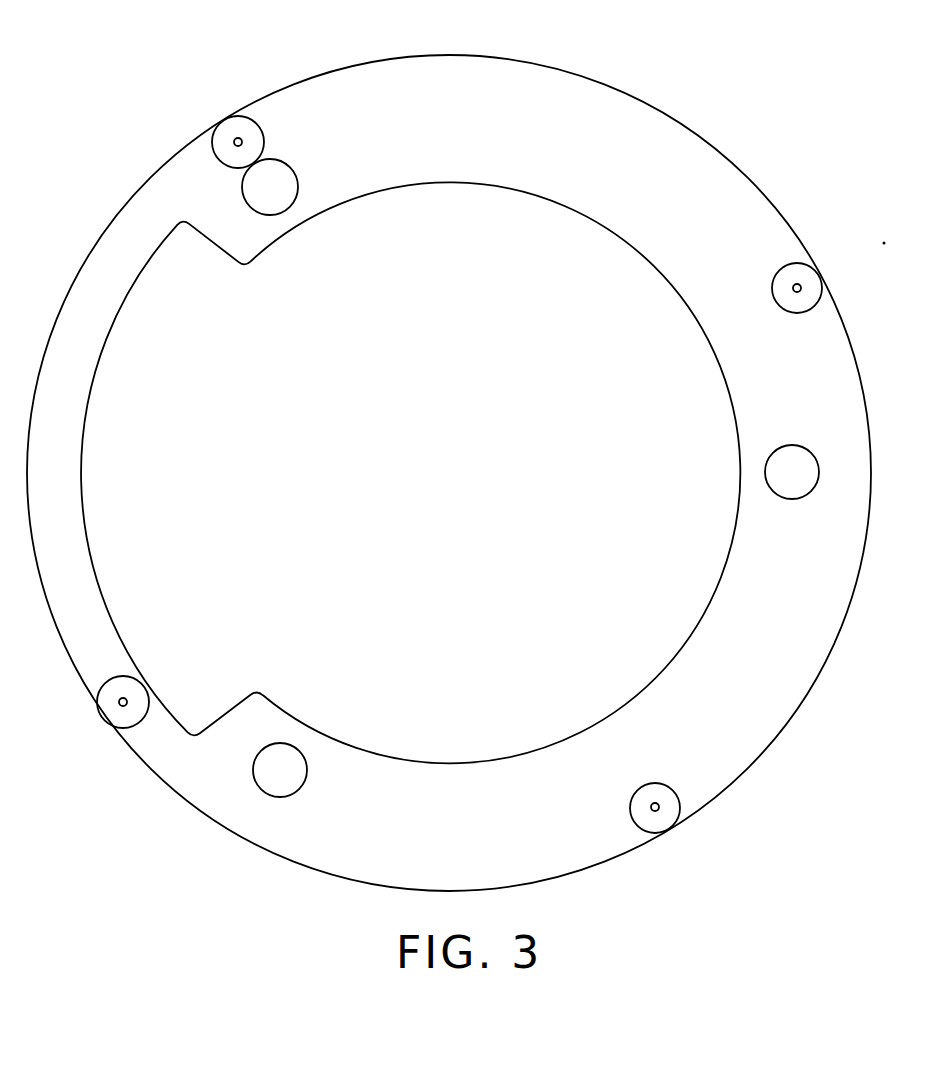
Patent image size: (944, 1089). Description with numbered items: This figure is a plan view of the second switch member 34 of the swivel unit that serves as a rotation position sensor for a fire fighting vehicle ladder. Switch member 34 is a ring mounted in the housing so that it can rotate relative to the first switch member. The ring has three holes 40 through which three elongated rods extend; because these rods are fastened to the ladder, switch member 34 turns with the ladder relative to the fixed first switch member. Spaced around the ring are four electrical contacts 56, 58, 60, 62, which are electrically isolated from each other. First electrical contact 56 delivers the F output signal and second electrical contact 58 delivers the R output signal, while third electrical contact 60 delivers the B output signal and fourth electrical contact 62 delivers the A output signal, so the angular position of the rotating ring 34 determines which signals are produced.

The second switch member 34 is at (578, 74).
The holes 40 is at (288, 166).
The first electrical contact 56 is at (237, 137).
The second electrical contact 58 is at (657, 811).
The third electrical contact 60 is at (126, 706).
The fourth electrical contact 62 is at (797, 284).